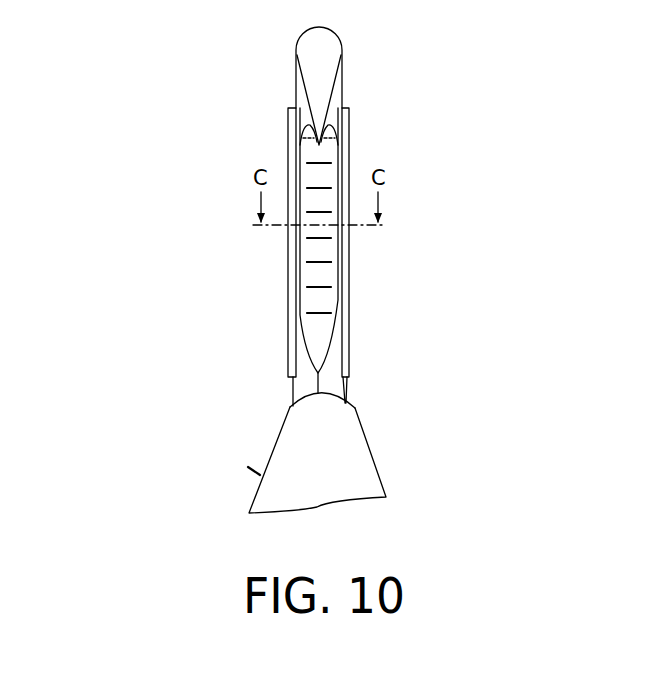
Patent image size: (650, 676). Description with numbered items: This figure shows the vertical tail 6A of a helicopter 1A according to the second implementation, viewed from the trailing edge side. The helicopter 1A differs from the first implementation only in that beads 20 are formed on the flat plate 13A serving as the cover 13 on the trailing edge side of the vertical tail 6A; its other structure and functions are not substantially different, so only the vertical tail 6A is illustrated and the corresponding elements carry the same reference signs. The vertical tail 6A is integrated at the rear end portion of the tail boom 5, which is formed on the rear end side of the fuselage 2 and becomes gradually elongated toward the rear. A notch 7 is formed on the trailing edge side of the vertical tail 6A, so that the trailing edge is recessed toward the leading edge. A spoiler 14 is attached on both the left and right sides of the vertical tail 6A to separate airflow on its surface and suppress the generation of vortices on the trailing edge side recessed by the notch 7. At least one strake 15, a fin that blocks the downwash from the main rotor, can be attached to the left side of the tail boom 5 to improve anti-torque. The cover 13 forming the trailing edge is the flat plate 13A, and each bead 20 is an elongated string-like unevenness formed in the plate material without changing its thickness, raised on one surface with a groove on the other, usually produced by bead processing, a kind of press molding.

The helicopter 1A is at (155, 170).
The vertical tail 6A is at (343, 83).
The spoiler 14 is at (290, 142).
The cover 13 is at (393, 250).
The flat plate 13A is at (319, 135).
The notch 7 is at (312, 298).
The bead 20 is at (317, 260).
The tail boom 5 is at (277, 438).
The fuselage 2 is at (378, 465).
The strake 15 is at (258, 470).